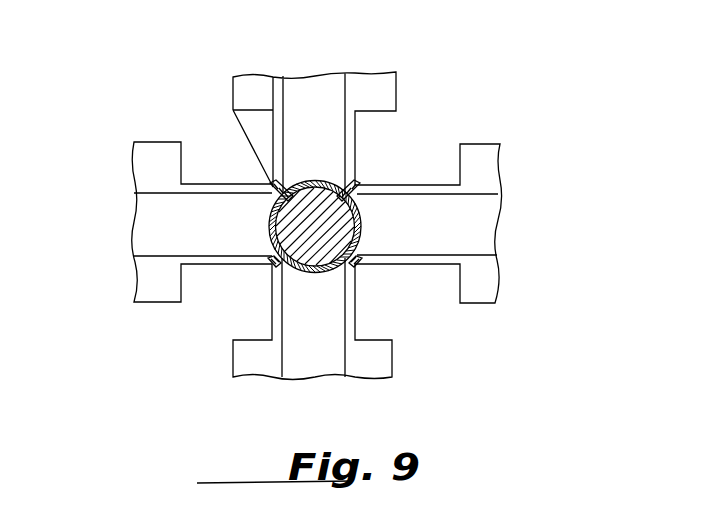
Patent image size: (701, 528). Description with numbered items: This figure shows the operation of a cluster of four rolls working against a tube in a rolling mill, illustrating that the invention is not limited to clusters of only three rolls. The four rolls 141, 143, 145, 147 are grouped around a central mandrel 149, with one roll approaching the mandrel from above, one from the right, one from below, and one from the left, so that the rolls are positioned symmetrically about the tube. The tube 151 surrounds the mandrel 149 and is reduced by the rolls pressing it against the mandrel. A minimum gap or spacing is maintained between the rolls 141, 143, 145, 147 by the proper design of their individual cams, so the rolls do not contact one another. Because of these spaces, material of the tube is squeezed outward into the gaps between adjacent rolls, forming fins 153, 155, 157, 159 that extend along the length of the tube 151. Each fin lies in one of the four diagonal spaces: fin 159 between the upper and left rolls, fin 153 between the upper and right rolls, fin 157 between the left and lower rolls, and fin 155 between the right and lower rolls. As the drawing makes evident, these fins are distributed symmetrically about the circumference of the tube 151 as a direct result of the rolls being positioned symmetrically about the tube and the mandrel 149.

The roll 141 is at (333, 133).
The roll 143 is at (480, 236).
The roll 145 is at (298, 317).
The roll 147 is at (175, 220).
The mandrel 149 is at (332, 235).
The tube 151 is at (265, 210).
The fin 153 is at (355, 186).
The fin 155 is at (352, 266).
The fin 157 is at (272, 266).
The fin 159 is at (277, 186).